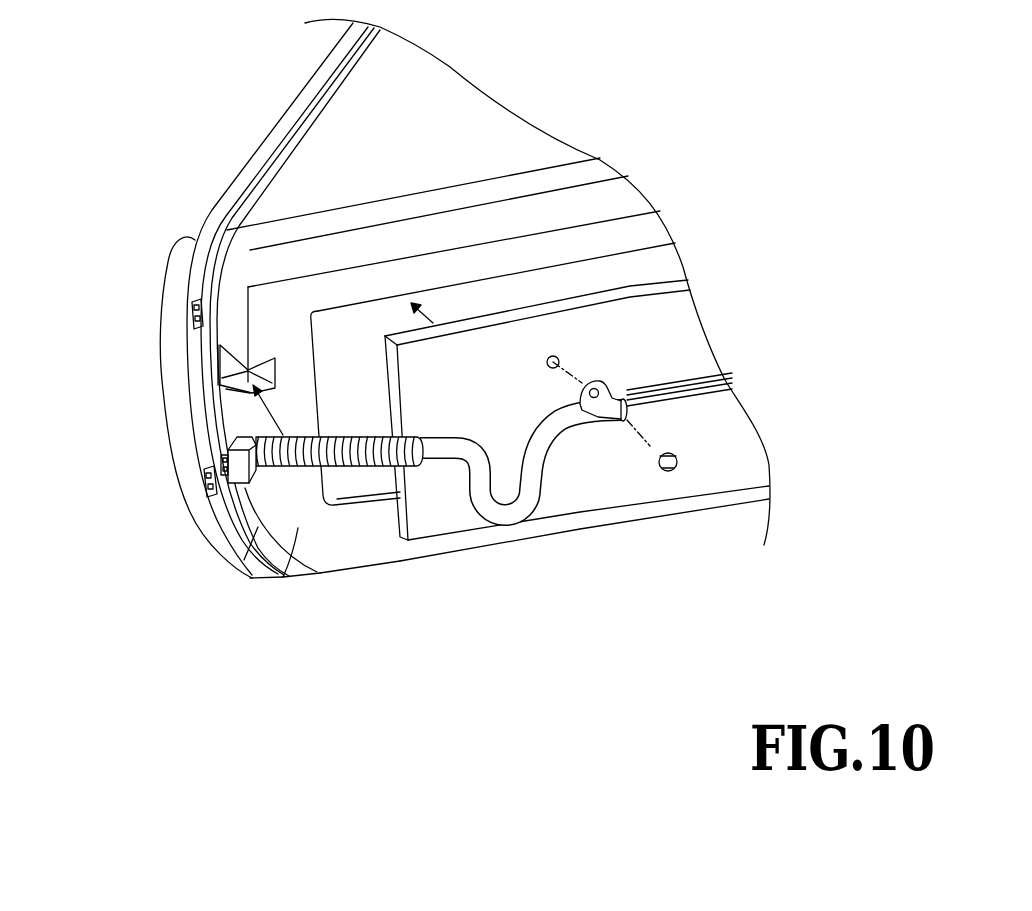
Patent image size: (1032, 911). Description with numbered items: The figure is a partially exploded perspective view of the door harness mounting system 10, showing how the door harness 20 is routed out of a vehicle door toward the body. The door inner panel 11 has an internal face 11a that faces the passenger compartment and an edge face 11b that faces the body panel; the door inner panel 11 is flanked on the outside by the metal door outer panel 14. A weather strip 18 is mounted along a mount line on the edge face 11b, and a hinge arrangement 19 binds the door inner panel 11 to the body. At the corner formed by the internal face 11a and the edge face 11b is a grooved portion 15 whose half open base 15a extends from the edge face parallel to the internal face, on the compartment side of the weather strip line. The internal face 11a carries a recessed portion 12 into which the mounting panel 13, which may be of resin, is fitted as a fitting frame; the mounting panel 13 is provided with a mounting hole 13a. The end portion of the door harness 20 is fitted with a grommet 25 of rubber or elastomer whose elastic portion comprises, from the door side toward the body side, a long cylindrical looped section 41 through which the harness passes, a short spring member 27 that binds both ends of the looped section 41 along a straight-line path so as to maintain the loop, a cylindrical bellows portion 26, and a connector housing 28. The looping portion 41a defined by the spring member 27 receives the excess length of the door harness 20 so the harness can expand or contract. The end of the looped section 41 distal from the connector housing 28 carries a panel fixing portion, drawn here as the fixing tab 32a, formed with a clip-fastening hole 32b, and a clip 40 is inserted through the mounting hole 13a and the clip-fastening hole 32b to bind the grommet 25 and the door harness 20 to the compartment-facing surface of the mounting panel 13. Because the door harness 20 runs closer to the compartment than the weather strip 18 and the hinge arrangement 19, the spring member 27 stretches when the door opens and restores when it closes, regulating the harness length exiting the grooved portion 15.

The system for mounting a door harness 10 is at (114, 206).
The door inner panel 11 is at (247, 264).
The internal face 11a is at (296, 530).
The edge face 11b is at (244, 560).
The recessed portion 12 is at (355, 486).
The mounting panel 13 is at (592, 482).
The mounting hole 13a is at (553, 356).
The door outer panel 14 is at (168, 271).
The grooved portion 15 is at (205, 386).
The half open base 15a is at (218, 352).
The weather strip 18 is at (215, 381).
The hinge arrangement 19 is at (192, 307).
The door harness 20 is at (704, 380).
The grommet 25 is at (375, 470).
The bellows portion 26 is at (338, 434).
The spring member 27 is at (498, 424).
The connector housing 28 is at (232, 515).
The clamp 32a is at (599, 380).
The clip-fastening hole 32b is at (606, 385).
The clip 40 is at (683, 487).
The looped section 41 is at (459, 494).
The looping portion 41a is at (509, 526).